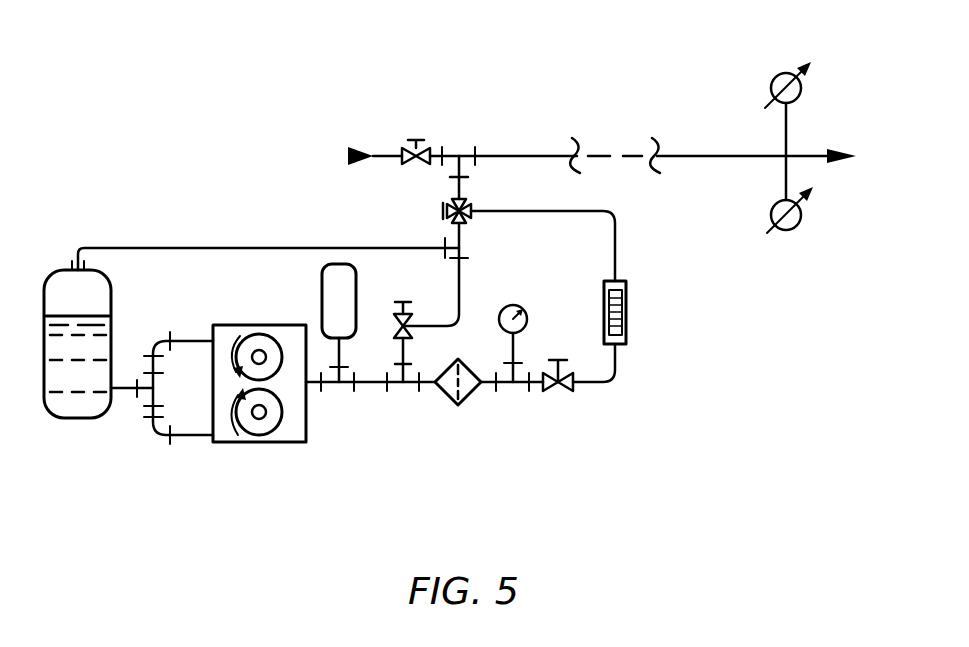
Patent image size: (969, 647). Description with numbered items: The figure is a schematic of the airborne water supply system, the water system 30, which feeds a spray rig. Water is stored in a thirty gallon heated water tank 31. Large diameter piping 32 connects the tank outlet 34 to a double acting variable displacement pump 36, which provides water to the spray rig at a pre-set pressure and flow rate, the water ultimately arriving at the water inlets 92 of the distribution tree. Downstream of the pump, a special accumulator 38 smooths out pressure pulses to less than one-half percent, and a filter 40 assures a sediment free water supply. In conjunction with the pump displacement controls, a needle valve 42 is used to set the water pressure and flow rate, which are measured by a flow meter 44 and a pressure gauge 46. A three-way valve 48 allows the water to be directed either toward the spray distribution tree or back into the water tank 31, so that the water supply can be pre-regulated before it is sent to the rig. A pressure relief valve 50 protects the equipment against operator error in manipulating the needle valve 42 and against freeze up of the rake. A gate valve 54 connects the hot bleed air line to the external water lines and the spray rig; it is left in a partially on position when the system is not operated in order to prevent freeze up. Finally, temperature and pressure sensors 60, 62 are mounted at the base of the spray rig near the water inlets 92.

The water system 30 is at (202, 196).
The heated water tank 31 is at (56, 268).
The large diameter piping 32 is at (130, 392).
The tank outlet 34 is at (112, 388).
The double acting variable displacement pump 36 is at (283, 283).
The accumulator 38 is at (357, 293).
The filter 40 is at (452, 403).
The needle valve 42 is at (560, 387).
The flow meter 44 is at (628, 302).
The pressure gauge 46 is at (552, 283).
The three-way valve 48 is at (473, 203).
The pressure relief valve 50 is at (408, 320).
The gate valve 54 is at (408, 140).
The temperature sensor 60 is at (773, 78).
The pressure sensor 62 is at (793, 228).
The water inlet 92 is at (893, 117).